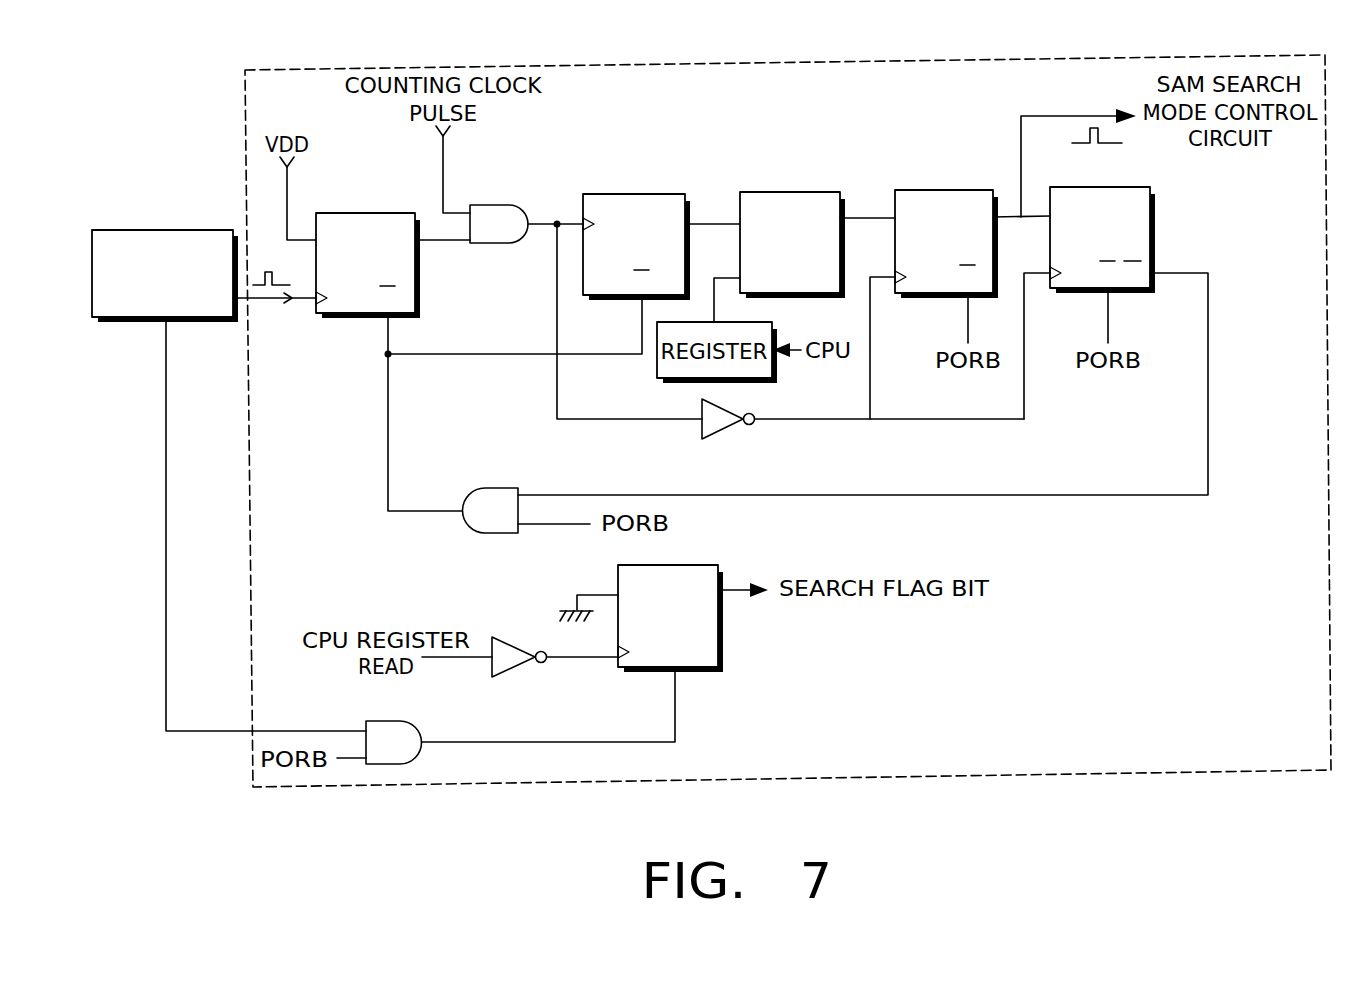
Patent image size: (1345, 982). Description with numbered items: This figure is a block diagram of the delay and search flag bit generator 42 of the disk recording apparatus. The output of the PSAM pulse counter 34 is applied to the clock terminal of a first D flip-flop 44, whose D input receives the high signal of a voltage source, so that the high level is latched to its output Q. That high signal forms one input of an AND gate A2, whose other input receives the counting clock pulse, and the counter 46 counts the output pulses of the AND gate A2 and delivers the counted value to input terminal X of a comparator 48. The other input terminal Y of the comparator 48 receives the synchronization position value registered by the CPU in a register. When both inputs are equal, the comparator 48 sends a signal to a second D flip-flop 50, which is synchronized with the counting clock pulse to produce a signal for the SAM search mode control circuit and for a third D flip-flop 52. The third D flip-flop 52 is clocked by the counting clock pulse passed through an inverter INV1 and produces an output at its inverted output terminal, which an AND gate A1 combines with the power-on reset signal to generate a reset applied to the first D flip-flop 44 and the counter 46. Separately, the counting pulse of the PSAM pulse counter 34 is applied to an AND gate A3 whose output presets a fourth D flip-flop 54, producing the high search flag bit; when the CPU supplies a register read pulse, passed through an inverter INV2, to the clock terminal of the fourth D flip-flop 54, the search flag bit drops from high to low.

The PSAM pulse counter 34 is at (159, 229).
The delay and search flag bit generator 42 is at (710, 63).
The first D flip-flop 44 is at (372, 212).
The counter 46 is at (640, 193).
The comparator 48 is at (797, 191).
The second D flip-flop 50 is at (935, 189).
The third D flip-flop 52 is at (1150, 226).
The fourth D flip-flop 54 is at (719, 633).
The AND gate A1 is at (490, 487).
The AND gate A2 is at (487, 204).
The AND gate A3 is at (392, 719).
The inverter INV1 is at (860, 437).
The inverter INV2 is at (520, 670).